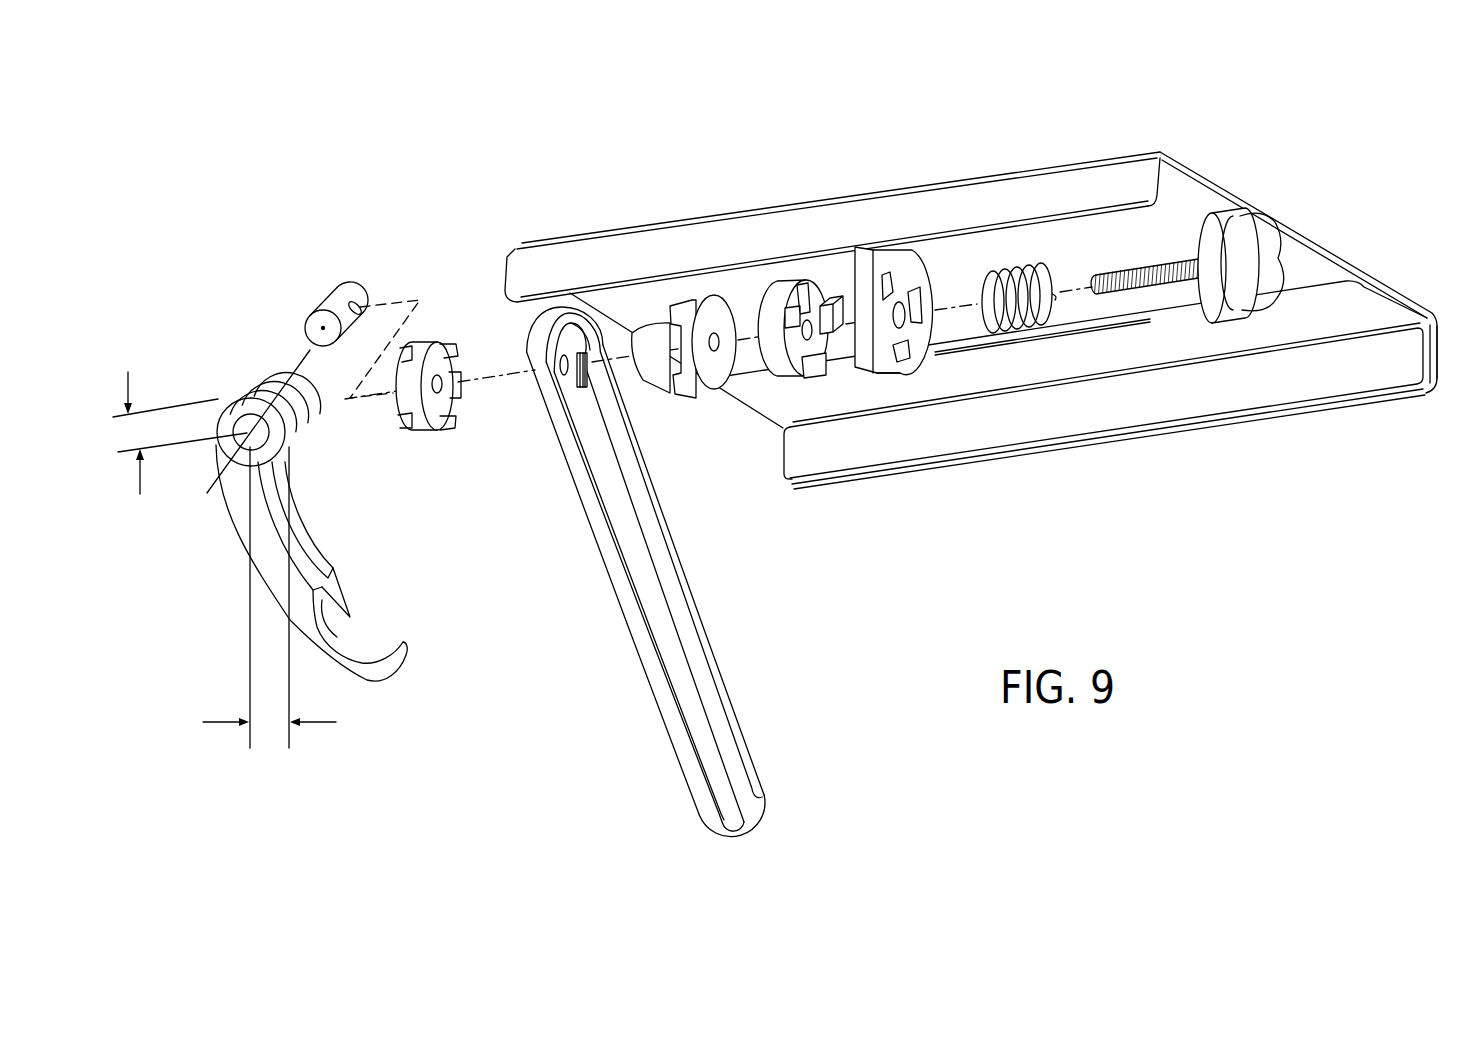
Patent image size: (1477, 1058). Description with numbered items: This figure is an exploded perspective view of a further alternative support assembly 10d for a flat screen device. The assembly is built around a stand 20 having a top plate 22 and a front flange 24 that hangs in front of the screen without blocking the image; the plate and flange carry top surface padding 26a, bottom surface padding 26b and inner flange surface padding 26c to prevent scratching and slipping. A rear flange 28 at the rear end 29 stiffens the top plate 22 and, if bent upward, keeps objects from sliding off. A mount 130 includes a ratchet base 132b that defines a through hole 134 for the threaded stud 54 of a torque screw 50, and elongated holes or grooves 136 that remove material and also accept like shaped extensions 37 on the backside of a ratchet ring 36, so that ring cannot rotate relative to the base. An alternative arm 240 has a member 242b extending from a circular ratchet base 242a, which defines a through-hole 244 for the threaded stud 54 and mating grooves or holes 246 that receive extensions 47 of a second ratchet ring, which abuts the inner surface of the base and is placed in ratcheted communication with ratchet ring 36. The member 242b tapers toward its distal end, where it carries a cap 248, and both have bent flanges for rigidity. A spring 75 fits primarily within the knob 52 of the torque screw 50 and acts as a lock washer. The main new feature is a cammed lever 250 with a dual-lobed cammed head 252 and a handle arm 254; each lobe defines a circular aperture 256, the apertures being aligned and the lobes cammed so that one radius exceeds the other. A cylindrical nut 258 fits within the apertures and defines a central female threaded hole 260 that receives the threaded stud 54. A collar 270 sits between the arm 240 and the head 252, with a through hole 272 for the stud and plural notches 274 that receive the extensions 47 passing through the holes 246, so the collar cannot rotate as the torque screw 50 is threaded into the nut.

The support assembly 10d is at (626, 157).
The stand 20 is at (1440, 310).
The top plate 22 is at (1190, 197).
The front flange 24 is at (1437, 364).
The top surface padding 26a is at (521, 243).
The bottom surface padding 26b is at (1362, 312).
The inner flange surface padding 26c is at (1228, 392).
The rear flange 28 is at (503, 277).
The rear end 29 is at (1128, 167).
The ratchet ring 36 is at (785, 290).
The extensions 37 is at (800, 288).
The extensions 47 is at (672, 394).
The torque screw 50 is at (1275, 210).
The knob 52 is at (1270, 262).
The threaded stud 54 is at (1140, 284).
The spring 75 is at (1013, 334).
The mount 130 is at (858, 260).
The ratchet base 132b is at (885, 373).
The through hole 134 is at (903, 305).
The elongated holes or grooves 136 is at (897, 257).
The arm 240 is at (630, 650).
The circular ratchet base 242a is at (534, 380).
The member 242b is at (708, 650).
The through-hole 244 is at (568, 388).
The mating grooves or holes 246 is at (597, 343).
The cap 248 is at (754, 808).
The cammed lever 250 is at (226, 388).
The cammed head 252 is at (266, 373).
The handle arm 254 is at (232, 513).
The circular aperture 256 is at (233, 441).
The cylindrical nut 258 is at (323, 291).
The threaded hole 260 is at (357, 303).
The collar 270 is at (430, 434).
The through hole 272 is at (446, 358).
The notches 274 is at (400, 418).